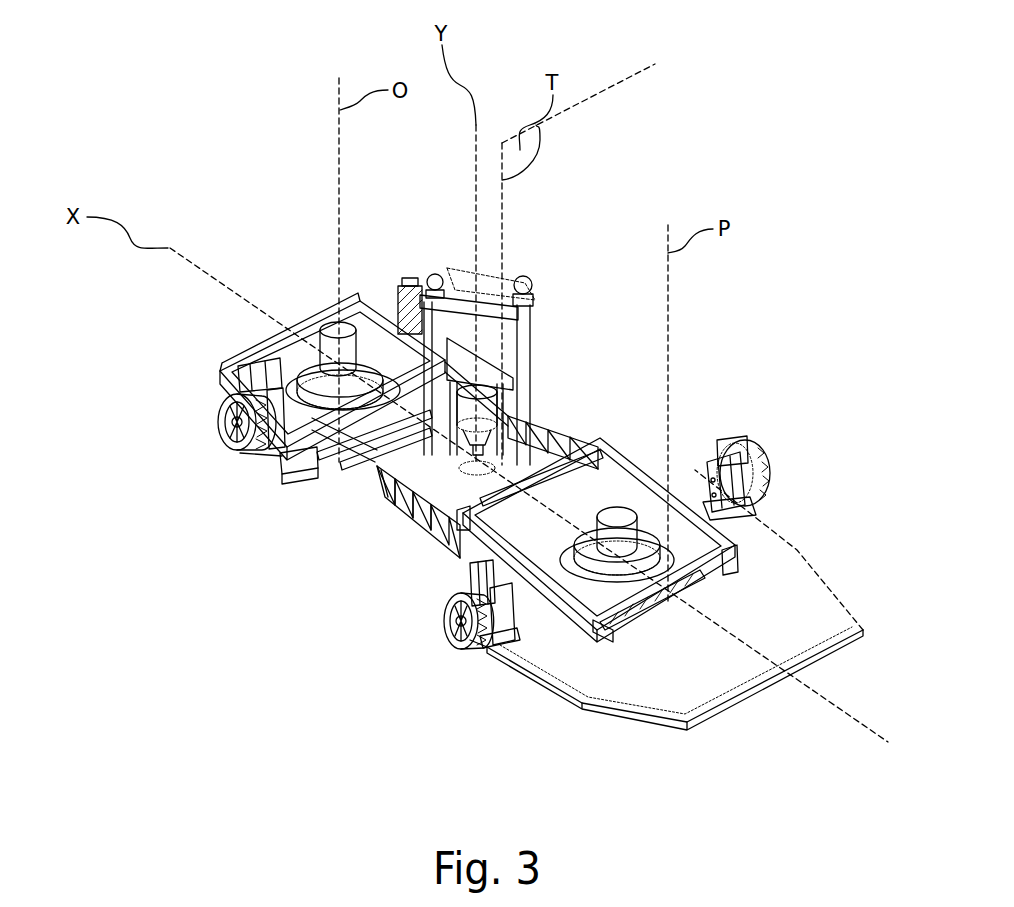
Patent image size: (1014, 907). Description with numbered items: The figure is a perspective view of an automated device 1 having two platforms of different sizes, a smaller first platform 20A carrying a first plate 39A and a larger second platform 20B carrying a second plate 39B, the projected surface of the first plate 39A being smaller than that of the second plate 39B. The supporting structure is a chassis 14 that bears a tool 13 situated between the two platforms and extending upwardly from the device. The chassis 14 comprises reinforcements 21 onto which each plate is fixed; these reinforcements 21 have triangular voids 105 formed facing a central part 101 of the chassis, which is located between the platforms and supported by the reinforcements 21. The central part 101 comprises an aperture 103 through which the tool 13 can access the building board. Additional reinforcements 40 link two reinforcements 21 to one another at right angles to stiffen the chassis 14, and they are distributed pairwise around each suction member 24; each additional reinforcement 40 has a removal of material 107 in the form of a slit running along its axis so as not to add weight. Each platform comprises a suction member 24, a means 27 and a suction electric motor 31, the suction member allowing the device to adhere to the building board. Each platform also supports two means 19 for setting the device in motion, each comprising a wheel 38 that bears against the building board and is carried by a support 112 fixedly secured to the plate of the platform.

The automated device 1 is at (199, 207).
The tool 13 is at (549, 341).
The chassis 14 is at (447, 520).
The means for setting in motion 19 is at (189, 431).
The first platform 20A is at (275, 460).
The second platform 20B is at (697, 685).
The reinforcements 21 is at (688, 542).
The suction member 24 is at (326, 312).
The means 27 is at (374, 363).
The suction electric motor 31 is at (346, 330).
The wheel 38 is at (220, 414).
The first plate 39A is at (272, 451).
The second plate 39B is at (675, 687).
The additional reinforcements 40 is at (352, 315).
The central part 101 is at (398, 485).
The aperture 103 is at (443, 492).
The voids 105 is at (560, 453).
The removal of material 107 is at (270, 348).
The support 112 is at (270, 387).